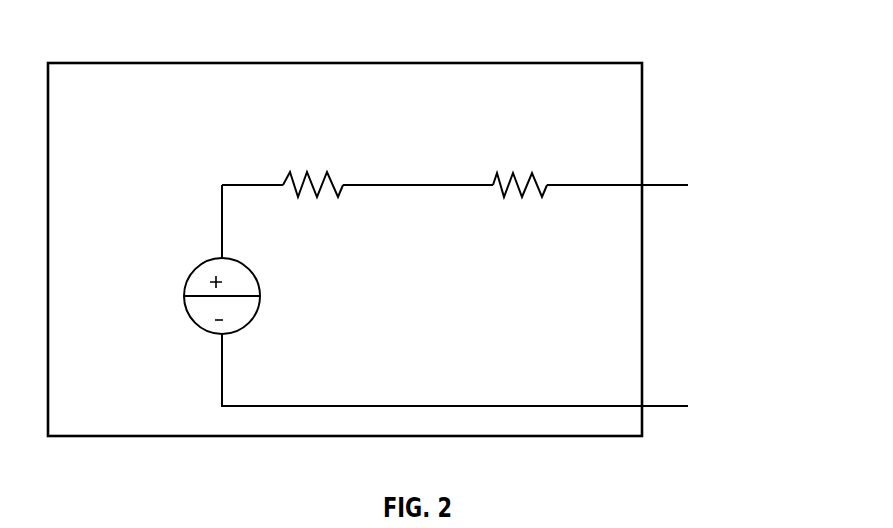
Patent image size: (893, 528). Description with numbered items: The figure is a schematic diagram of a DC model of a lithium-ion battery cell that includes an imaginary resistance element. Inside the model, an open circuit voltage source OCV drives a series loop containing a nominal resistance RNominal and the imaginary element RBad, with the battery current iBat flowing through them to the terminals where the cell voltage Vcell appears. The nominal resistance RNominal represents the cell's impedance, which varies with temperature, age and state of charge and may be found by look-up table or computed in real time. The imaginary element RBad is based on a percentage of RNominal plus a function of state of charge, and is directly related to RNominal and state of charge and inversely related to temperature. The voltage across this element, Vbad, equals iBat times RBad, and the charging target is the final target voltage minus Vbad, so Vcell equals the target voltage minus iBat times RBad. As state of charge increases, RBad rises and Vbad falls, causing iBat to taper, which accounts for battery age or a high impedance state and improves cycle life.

The open circuit voltage source OCV is at (167, 296).
The nominal resistance RNominal is at (311, 210).
The imaginary RBad element RBad is at (517, 210).
The VBad voltage drop Vbad is at (520, 133).
The battery current iBat is at (790, 160).
The cell voltage Vcell is at (673, 205).